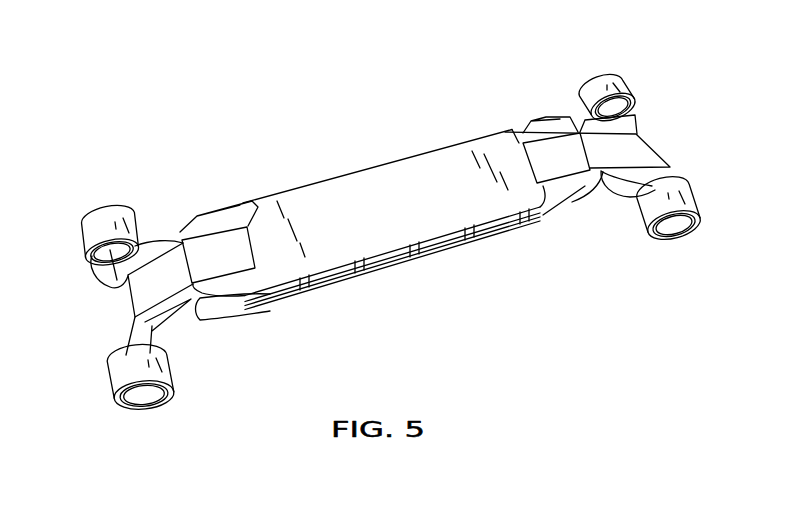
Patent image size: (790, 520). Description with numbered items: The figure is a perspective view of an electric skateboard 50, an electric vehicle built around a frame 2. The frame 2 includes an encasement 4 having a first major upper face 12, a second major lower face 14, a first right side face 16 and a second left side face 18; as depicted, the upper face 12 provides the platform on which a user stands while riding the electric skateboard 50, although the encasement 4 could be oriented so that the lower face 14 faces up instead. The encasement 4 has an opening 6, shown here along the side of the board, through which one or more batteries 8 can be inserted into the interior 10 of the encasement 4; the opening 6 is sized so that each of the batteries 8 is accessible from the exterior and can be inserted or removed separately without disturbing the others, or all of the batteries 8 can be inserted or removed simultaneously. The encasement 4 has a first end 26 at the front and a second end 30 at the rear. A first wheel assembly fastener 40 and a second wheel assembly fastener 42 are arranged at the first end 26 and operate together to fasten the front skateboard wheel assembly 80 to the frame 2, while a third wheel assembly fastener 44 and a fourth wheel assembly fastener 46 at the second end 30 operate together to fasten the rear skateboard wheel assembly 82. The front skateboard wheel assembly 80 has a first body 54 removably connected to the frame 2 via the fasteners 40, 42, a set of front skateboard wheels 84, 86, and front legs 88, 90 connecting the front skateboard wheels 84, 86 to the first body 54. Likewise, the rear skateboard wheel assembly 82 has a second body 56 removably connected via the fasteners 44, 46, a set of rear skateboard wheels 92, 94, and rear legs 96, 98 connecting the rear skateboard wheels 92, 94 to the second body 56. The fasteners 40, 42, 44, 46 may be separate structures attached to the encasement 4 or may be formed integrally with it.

The frame 2 is at (400, 146).
The encasement 4 is at (455, 160).
The opening 6 is at (529, 221).
The batteries 8 is at (490, 236).
The interior 10 is at (309, 294).
The first major (upper) face 12 is at (363, 197).
The second major (lower) face 14 is at (331, 294).
The first (right) side face 16 is at (362, 160).
The second (left) side face 18 is at (541, 222).
The first end 26 is at (271, 226).
The second end 30 is at (520, 154).
The first wheel assembly fastener 40 is at (208, 216).
The second wheel assembly fastener 42 is at (213, 300).
The third wheel assembly fastener 44 is at (553, 121).
The fourth wheel assembly fastener 46 is at (600, 203).
The electric skateboard 50 is at (183, 159).
The first body 54 is at (147, 290).
The second body 56 is at (573, 165).
The front skateboard wheel assembly 80 is at (145, 249).
The rear skateboard wheel assembly 82 is at (614, 141).
The front skateboard wheel 84 is at (100, 228).
The front skateboard wheel 86 is at (127, 375).
The front leg 88 is at (117, 264).
The front leg 90 is at (130, 340).
The rear skateboard wheel 92 is at (622, 84).
The rear skateboard wheel 94 is at (648, 213).
The rear leg 96 is at (636, 116).
The rear leg 98 is at (668, 180).